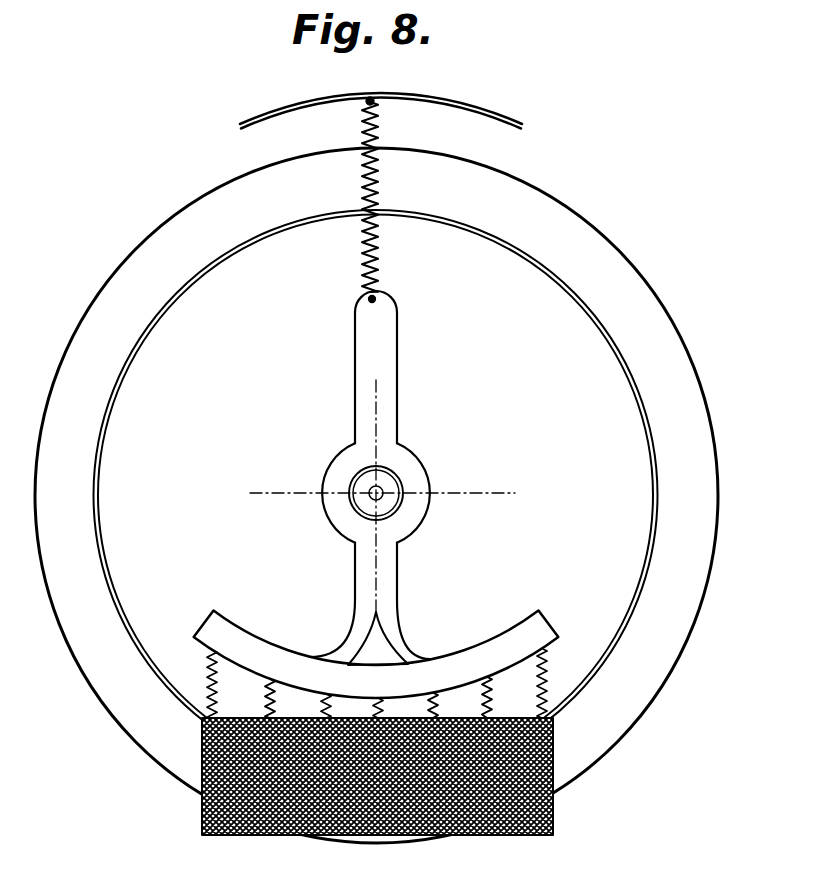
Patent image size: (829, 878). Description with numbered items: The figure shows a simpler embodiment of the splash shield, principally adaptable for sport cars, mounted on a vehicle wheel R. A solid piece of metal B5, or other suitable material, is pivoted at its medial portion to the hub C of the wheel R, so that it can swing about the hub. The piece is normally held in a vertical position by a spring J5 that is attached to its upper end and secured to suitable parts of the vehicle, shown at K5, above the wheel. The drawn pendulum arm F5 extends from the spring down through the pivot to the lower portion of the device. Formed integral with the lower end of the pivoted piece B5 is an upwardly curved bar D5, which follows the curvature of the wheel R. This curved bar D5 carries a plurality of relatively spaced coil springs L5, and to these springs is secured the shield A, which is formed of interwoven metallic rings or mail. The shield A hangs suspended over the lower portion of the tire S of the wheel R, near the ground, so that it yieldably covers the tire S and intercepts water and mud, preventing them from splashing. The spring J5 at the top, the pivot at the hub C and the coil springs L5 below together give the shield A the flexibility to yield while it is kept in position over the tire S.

The tire S is at (647, 336).
The vehicle wheel R is at (580, 368).
The vehicle attachment part K5 is at (381, 93).
The spring J5 is at (380, 140).
The pendulum arm F5 is at (385, 301).
The solid piece of metal B5 is at (413, 470).
The hub C is at (365, 508).
The upwardly curved bar D5 is at (433, 665).
The coil springs L5 is at (265, 695).
The shield A is at (553, 800).